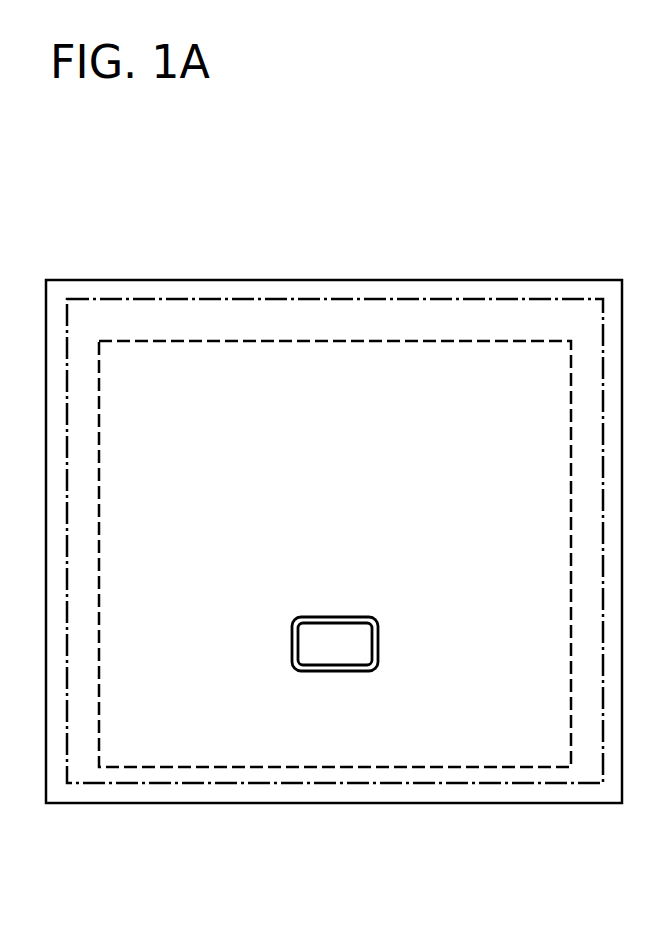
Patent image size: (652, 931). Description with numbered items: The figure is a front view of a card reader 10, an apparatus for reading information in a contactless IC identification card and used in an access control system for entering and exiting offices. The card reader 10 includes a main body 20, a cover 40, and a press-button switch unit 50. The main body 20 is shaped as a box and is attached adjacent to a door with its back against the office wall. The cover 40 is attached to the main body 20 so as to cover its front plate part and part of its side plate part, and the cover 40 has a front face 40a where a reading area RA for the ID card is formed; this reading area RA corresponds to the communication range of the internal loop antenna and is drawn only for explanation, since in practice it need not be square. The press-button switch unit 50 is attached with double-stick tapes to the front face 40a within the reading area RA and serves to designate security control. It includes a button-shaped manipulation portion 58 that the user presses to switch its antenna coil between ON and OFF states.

The card reader 10 is at (587, 253).
The main body 20 is at (287, 298).
The cover 40 is at (362, 279).
The front face 40a is at (455, 323).
The reading area RA is at (165, 340).
The press-button switch unit 50 is at (335, 672).
The manipulation portion 58 is at (357, 643).